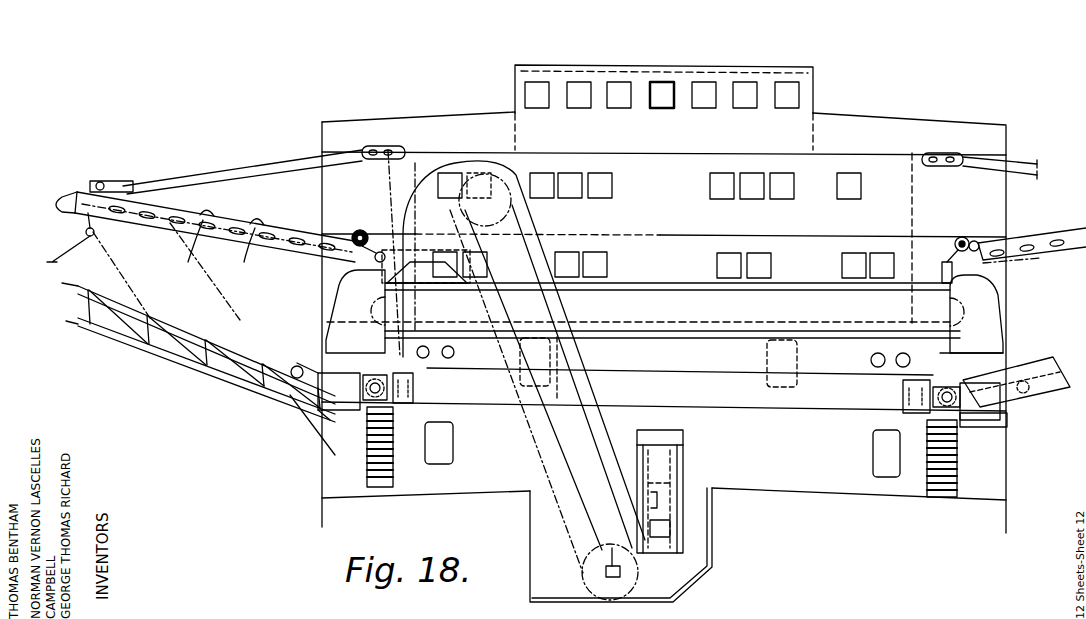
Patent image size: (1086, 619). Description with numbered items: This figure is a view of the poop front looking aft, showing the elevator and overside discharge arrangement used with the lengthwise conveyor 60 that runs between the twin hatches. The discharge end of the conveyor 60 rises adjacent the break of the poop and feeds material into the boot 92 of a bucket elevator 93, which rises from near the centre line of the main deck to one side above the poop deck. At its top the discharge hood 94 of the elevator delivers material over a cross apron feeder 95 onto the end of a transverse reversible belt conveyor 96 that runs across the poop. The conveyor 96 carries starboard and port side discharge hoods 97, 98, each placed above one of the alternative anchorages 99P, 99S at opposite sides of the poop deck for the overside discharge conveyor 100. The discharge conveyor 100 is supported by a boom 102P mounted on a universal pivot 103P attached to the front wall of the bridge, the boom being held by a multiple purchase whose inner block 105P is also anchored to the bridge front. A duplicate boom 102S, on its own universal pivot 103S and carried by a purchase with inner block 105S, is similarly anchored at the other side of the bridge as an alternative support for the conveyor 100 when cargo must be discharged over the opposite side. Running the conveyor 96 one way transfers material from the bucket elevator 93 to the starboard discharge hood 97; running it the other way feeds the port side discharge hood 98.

The conveyor 60 is at (690, 503).
The boot 92 is at (634, 572).
The bucket elevator 93 is at (540, 300).
The discharge hood 94 is at (458, 216).
The cross apron feeder 95 is at (430, 247).
The transverse reversible belt conveyor 96 is at (664, 333).
The starboard side discharge hood 97 is at (333, 338).
The port side discharge hood 98 is at (1000, 347).
The anchorage 99P is at (333, 395).
The anchorage 99S is at (997, 422).
The overside discharge conveyor 100 is at (232, 366).
The boom 102P is at (262, 248).
The duplicate boom 102S is at (1040, 243).
The universal pivot 103P is at (398, 281).
The universal pivot 103S is at (948, 262).
The inner block 105P is at (375, 150).
The inner block 105S is at (949, 152).